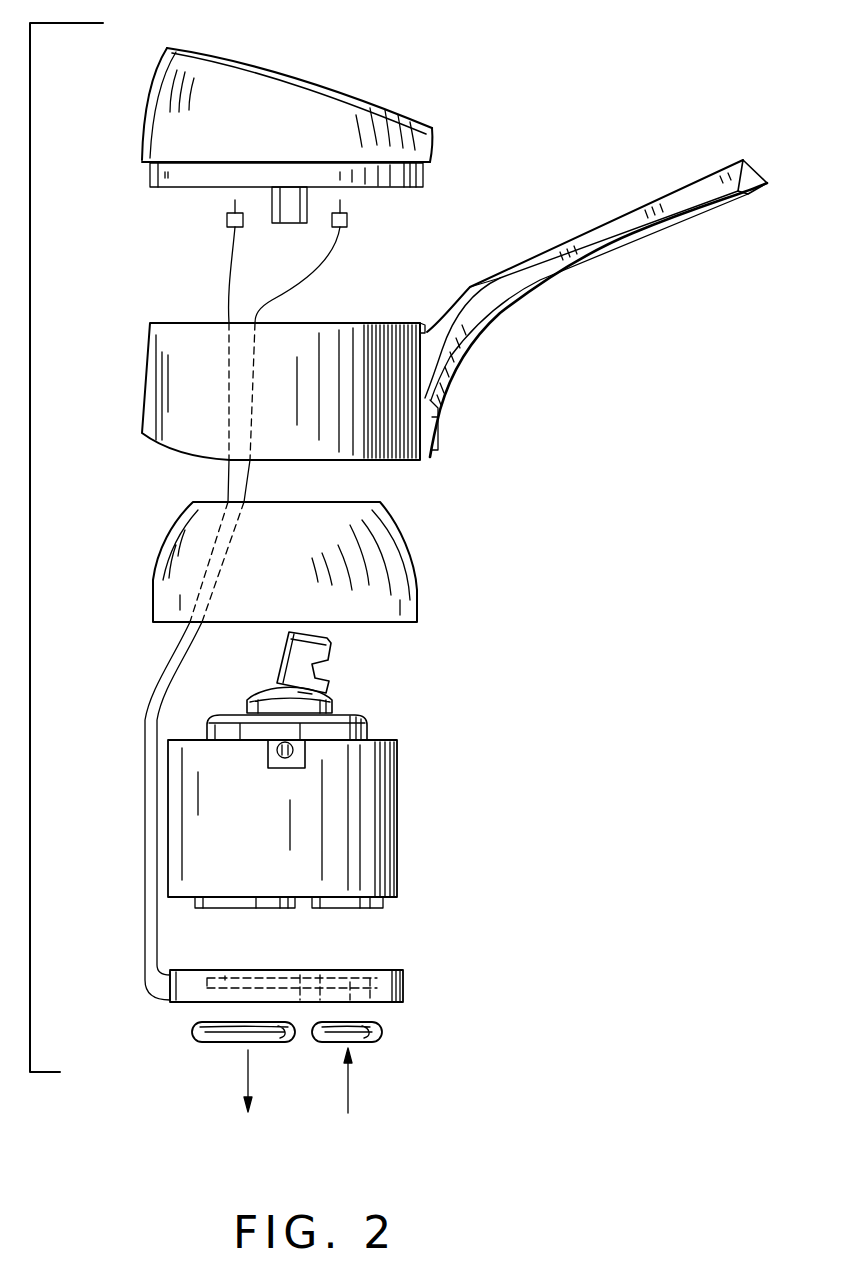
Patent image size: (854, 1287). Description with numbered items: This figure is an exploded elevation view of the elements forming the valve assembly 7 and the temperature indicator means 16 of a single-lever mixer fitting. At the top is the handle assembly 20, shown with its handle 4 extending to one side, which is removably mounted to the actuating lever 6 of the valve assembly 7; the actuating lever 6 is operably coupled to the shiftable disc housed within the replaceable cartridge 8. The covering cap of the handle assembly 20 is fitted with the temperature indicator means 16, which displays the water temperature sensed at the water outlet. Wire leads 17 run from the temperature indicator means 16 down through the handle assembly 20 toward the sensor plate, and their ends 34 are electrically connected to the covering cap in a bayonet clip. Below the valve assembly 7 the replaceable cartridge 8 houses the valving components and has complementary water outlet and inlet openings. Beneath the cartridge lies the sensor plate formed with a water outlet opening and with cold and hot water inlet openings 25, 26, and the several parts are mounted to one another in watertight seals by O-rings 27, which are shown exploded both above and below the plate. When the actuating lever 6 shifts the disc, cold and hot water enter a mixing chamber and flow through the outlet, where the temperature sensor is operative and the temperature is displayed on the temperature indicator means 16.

The handle 4 is at (618, 228).
The actuating lever 6 is at (312, 652).
The valve assembly 7 is at (365, 710).
The replaceable cartridge 8 is at (388, 872).
The temperature indicator means 16 is at (320, 67).
The wire leads 17 is at (162, 937).
The handle assembly 20 is at (403, 309).
The cold water inlet opening 25 is at (373, 1003).
The hot water inlet opening 26 is at (207, 1003).
The O-rings 27 is at (227, 902).
The ends of wire leads 34 is at (227, 222).